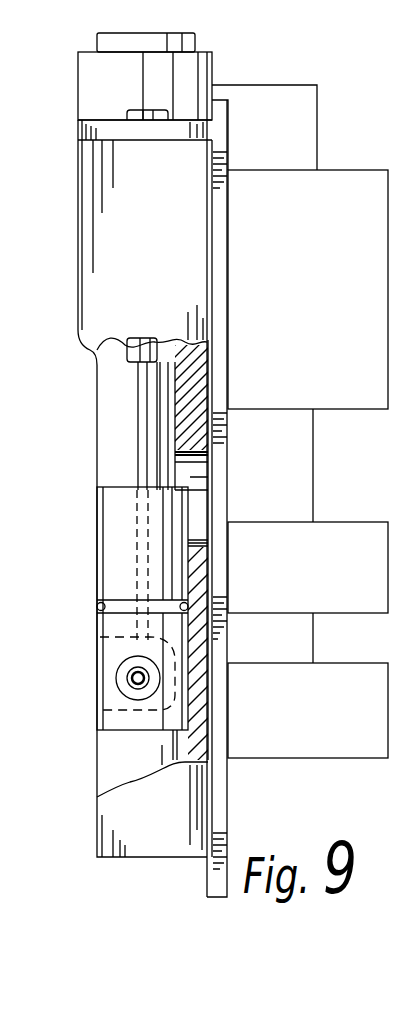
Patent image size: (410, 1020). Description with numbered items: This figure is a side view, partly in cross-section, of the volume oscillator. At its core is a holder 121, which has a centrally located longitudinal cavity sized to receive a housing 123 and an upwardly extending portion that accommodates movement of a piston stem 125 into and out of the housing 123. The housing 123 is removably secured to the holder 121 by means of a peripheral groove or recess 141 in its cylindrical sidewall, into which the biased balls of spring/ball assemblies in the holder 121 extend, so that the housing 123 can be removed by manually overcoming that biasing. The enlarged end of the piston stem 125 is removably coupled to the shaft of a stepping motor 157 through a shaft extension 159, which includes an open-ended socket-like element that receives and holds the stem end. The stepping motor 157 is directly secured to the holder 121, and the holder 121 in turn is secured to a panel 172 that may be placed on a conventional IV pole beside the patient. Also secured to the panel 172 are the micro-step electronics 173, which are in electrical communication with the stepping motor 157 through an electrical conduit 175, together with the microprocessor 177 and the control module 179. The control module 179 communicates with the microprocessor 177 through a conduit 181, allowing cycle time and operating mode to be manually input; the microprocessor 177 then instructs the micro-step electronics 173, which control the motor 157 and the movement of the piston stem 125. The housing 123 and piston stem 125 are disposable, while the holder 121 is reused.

The stepping motor 157 is at (97, 92).
The holder 121 is at (107, 223).
The shaft extension 159 is at (127, 348).
The piston stem 125 is at (138, 452).
The housing 123 is at (115, 548).
The peripheral groove or recess 141 is at (120, 603).
The panel 172 is at (207, 868).
The electrical conduit 175 is at (318, 100).
The micro-step electronics 173 is at (382, 170).
The microprocessor 177 is at (366, 522).
The conduit 181 is at (313, 636).
The control module 179 is at (347, 760).